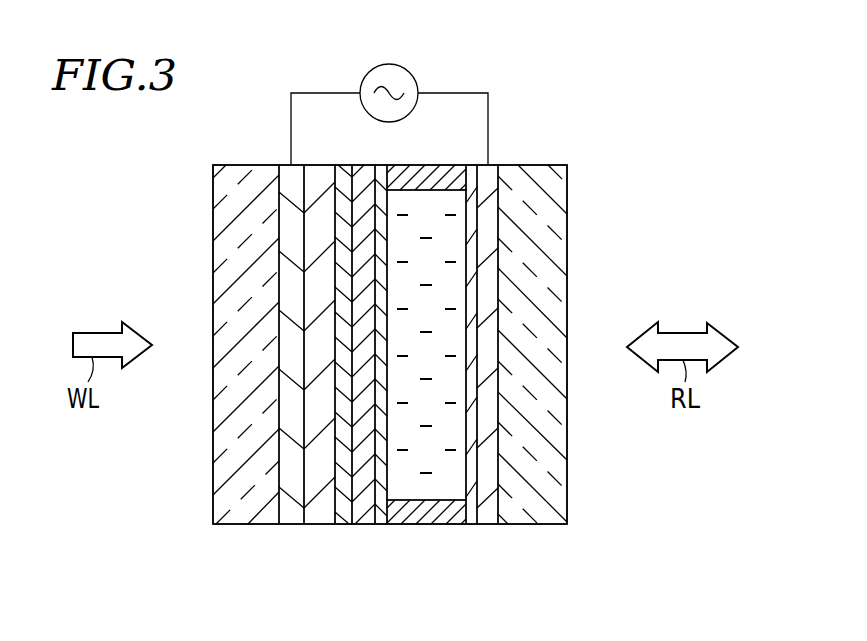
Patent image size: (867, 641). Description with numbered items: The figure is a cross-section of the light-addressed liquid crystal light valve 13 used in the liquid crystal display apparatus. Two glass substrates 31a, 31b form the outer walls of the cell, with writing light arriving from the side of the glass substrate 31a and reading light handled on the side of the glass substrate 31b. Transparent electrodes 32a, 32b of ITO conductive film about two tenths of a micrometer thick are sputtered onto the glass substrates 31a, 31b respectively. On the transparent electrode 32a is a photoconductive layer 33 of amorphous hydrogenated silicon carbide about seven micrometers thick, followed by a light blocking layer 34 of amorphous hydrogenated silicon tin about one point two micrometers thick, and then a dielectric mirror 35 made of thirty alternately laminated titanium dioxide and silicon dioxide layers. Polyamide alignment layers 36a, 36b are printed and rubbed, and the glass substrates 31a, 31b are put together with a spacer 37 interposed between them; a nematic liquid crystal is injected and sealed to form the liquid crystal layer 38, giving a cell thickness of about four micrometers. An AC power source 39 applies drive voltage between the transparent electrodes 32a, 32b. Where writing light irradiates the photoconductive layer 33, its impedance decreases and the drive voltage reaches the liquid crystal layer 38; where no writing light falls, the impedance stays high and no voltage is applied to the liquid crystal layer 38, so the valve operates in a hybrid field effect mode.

The light-addressed liquid crystal light valve 13 is at (600, 91).
The glass substrate 31a is at (243, 167).
The glass substrate 31b is at (550, 167).
The transparent electrode 32a is at (288, 522).
The transparent electrode 32b is at (497, 165).
The photoconductive layer 33 is at (320, 522).
The light blocking layer 34 is at (340, 523).
The dielectric mirror 35 is at (360, 523).
The alignment layer 36a is at (383, 523).
The alignment layer 36b is at (475, 165).
The spacer 37 is at (442, 522).
The liquid crystal layer 38 is at (453, 482).
The AC power source 39 is at (413, 70).